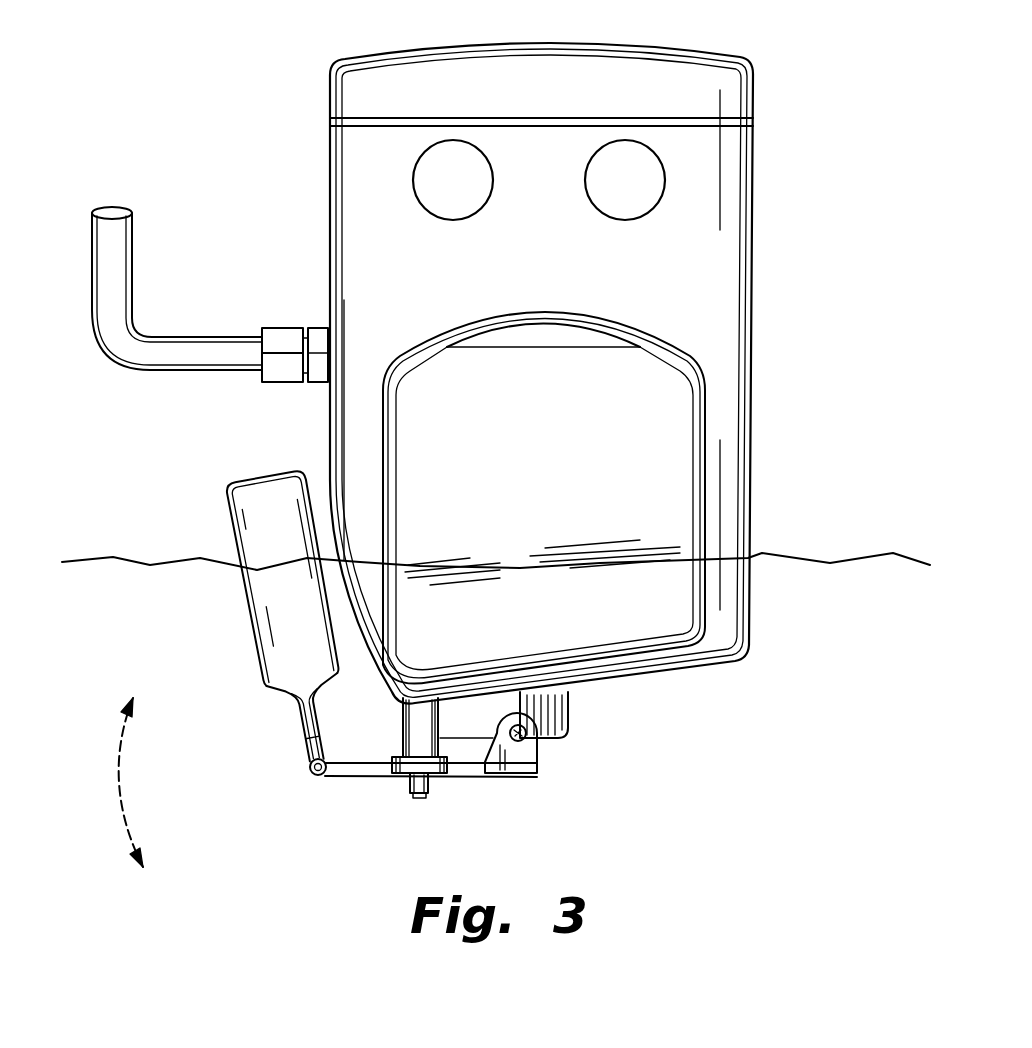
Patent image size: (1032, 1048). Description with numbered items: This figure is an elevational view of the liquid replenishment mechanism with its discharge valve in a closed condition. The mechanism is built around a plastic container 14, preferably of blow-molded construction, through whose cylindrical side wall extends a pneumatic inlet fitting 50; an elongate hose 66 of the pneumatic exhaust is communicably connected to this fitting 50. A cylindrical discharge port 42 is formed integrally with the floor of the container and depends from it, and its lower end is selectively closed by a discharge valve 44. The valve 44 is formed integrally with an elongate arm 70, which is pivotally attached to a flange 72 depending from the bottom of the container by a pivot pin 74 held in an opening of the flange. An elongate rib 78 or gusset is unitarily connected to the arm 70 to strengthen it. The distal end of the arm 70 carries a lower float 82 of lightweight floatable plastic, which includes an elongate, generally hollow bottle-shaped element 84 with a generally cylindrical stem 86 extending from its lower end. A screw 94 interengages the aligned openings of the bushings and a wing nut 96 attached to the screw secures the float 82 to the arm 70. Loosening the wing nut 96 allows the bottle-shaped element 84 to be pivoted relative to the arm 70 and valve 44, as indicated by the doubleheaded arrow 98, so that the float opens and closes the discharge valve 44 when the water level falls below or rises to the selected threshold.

The container 14 is at (390, 55).
The discharge port 42 is at (399, 724).
The discharge valve 44 is at (415, 783).
The pneumatic inlet fitting 50 is at (283, 328).
The hose 66 is at (152, 372).
The arm 70 is at (367, 770).
The flange 72 is at (560, 707).
The pivot pin 74 is at (522, 743).
The rib 78 is at (398, 777).
The lower float 82 is at (232, 523).
The bottle-shaped element 84 is at (237, 548).
The stem 86 is at (300, 718).
The screw 94 is at (310, 778).
The wing nut 96 is at (308, 767).
The doubleheaded arrow 98 is at (120, 762).